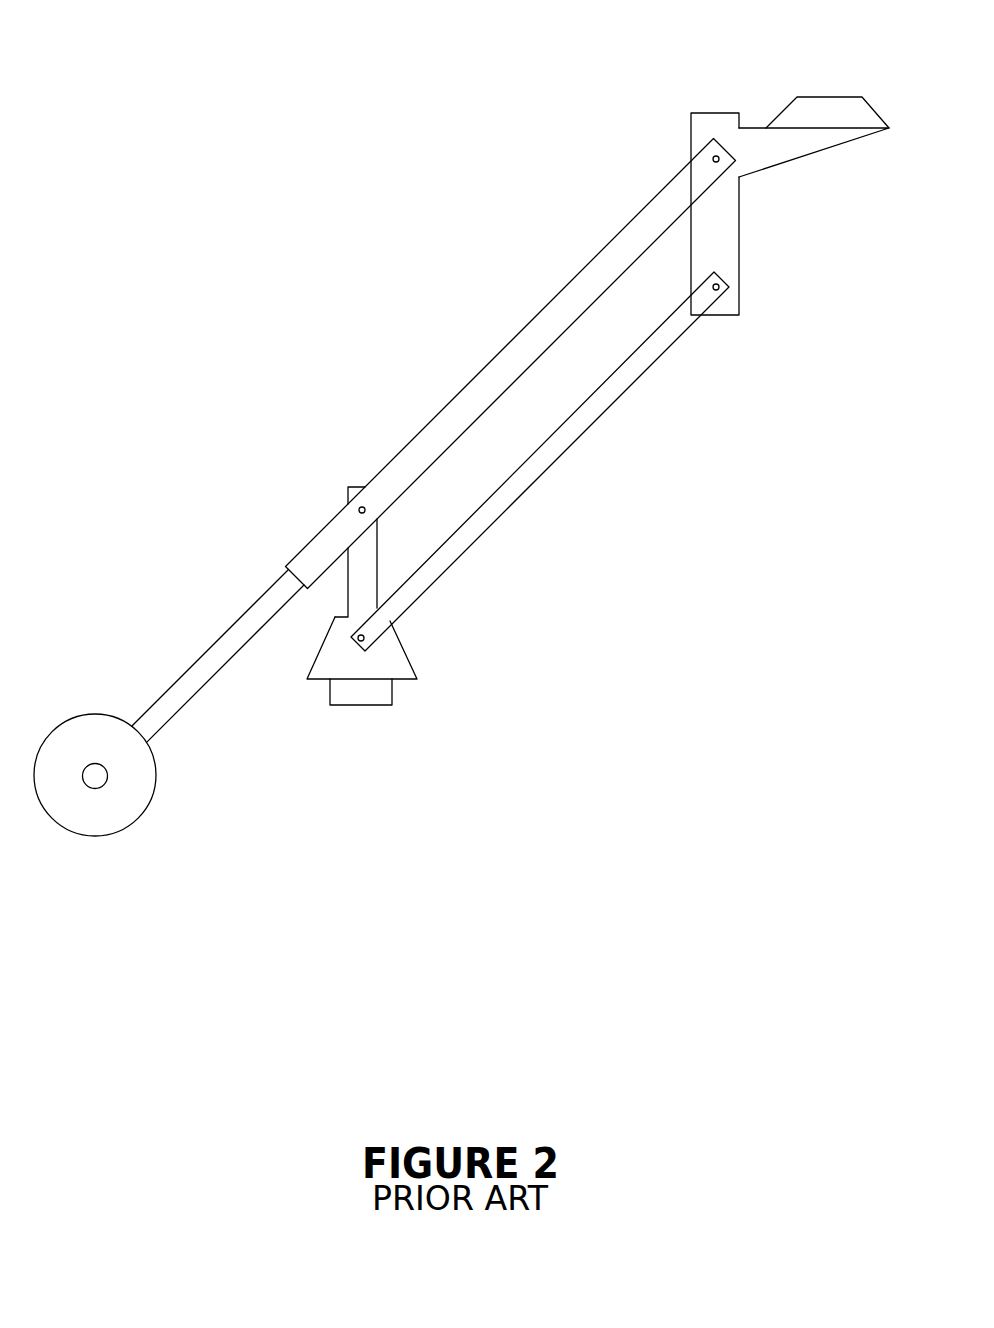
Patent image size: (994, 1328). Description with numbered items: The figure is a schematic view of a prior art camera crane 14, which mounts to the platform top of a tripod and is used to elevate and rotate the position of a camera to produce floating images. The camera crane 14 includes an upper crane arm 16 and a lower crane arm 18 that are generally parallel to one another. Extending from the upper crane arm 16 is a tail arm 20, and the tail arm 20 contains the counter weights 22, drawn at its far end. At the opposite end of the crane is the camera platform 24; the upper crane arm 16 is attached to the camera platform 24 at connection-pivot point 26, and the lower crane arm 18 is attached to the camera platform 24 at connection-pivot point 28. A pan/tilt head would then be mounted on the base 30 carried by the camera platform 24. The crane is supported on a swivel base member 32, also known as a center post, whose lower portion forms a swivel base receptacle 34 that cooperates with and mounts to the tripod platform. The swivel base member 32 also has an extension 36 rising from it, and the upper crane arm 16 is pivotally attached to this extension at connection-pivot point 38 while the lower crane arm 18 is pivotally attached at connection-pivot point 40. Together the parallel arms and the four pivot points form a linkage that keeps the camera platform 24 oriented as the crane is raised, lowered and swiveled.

The camera crane 14 is at (375, 165).
The upper crane arm 16 is at (570, 297).
The lower crane arm 18 is at (541, 460).
The tail arm 20 is at (248, 625).
The counter weights 22 is at (122, 809).
The camera platform 24 is at (725, 237).
The connection-pivot point 26 is at (713, 160).
The connection-pivot point 28 is at (720, 290).
The base 30 is at (850, 107).
The swivel base member 32 is at (408, 721).
The swivel base receptacle 34 is at (387, 692).
The extension 36 is at (367, 560).
The connection-pivot point 38 is at (357, 512).
The connection-pivot point 40 is at (390, 627).